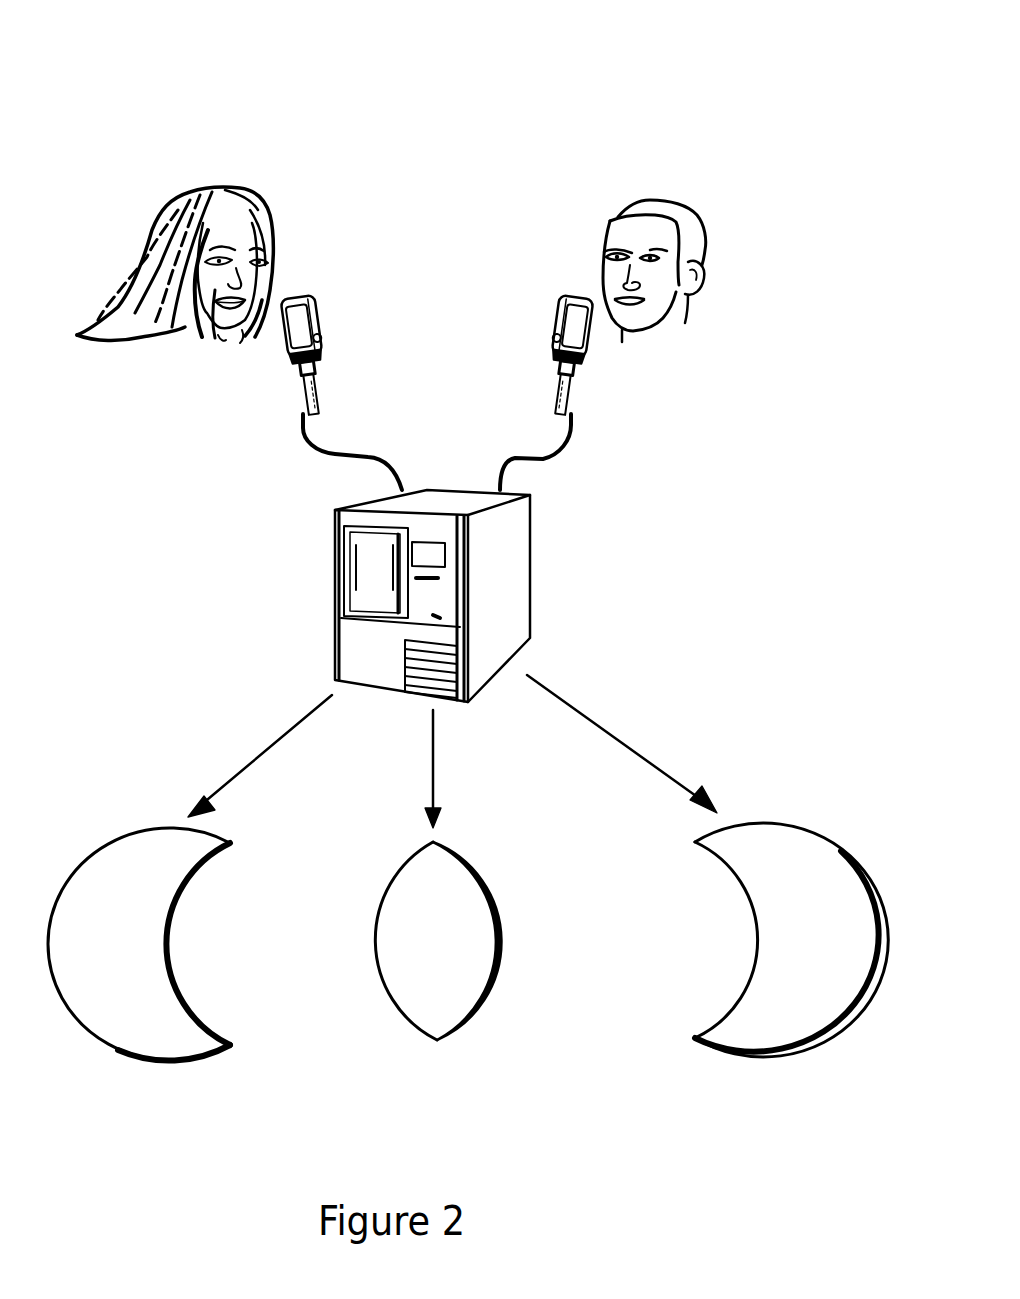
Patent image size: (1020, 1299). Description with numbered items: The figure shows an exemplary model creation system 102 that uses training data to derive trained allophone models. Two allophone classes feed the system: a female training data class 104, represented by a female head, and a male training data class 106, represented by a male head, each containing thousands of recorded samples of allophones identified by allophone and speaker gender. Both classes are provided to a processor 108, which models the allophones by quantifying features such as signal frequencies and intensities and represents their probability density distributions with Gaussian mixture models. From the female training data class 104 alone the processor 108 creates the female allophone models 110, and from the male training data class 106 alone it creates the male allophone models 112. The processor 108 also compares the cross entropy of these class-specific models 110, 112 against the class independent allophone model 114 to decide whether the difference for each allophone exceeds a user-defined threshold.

The model creation system 102 is at (552, 106).
The female training data class 104 is at (150, 386).
The male training data class 106 is at (727, 392).
The processor 108 is at (530, 575).
The female allophone models 110 is at (170, 1062).
The male allophone models 112 is at (777, 1060).
The class independent allophone model 114 is at (457, 1040).